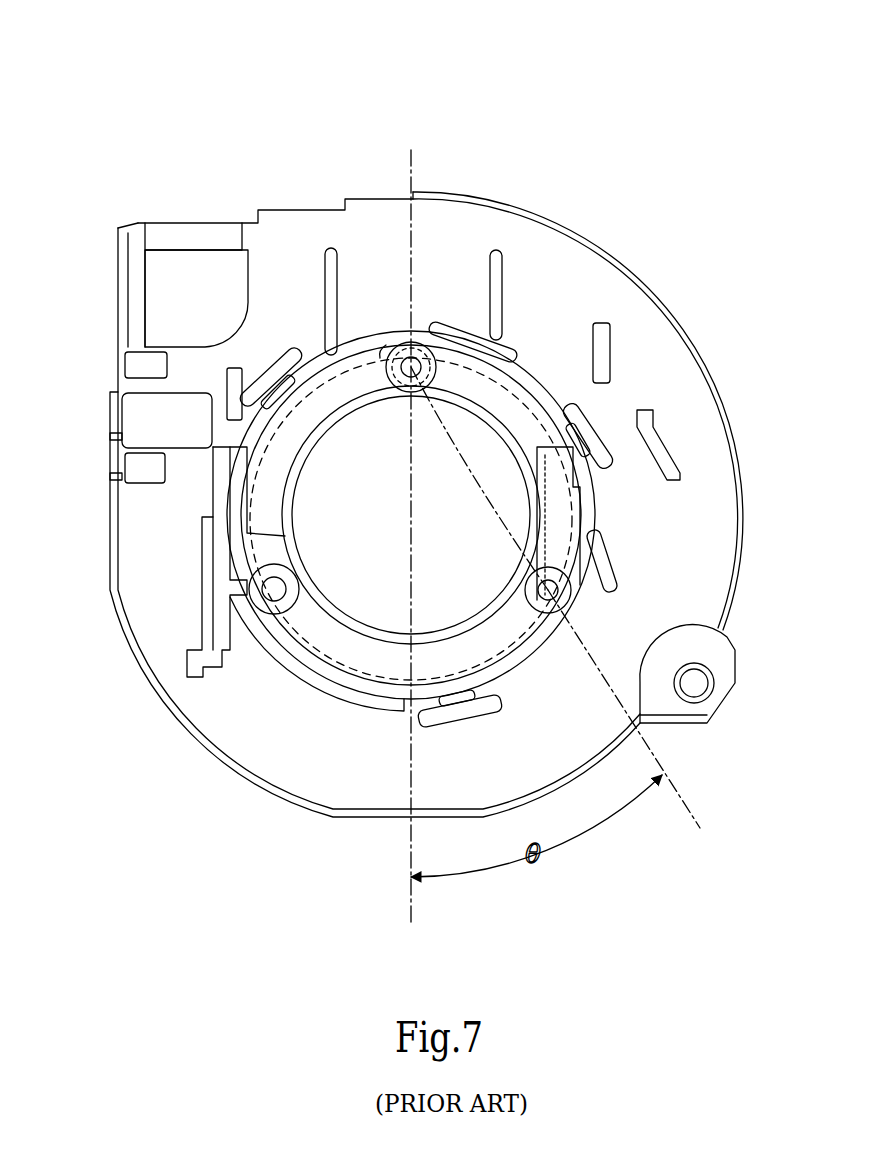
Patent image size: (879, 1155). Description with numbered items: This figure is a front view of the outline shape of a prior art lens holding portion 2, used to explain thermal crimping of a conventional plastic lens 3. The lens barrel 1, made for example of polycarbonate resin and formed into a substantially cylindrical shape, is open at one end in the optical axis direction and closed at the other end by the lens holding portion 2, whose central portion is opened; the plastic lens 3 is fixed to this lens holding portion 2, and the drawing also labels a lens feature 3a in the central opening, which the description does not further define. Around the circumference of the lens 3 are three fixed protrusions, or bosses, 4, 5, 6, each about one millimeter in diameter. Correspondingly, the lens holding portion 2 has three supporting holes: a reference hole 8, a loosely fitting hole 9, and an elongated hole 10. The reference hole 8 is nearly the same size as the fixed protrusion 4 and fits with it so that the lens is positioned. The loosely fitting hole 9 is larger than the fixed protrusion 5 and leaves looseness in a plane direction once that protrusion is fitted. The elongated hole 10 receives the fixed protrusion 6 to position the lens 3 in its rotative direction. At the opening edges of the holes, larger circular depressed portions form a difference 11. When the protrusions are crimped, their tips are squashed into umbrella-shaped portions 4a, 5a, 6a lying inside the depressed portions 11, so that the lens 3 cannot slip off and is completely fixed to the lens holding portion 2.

The lens barrel 1 is at (627, 126).
The lens holding portion 2 is at (320, 355).
The plastic lens 3 is at (260, 378).
The aperture ring 3a is at (477, 440).
The fixed protrusion 4 is at (405, 343).
The umbrella-shaped portion 4a is at (435, 340).
The fixed protrusion 5 is at (240, 588).
The umbrella-shaped portion 5a is at (257, 595).
The fixed protrusion 6 is at (560, 592).
The umbrella-shaped portion 6a is at (590, 577).
The reference hole 8 is at (387, 353).
The loosely fitting hole 9 is at (249, 561).
The elongated hole 10 is at (588, 600).
The depressed portion 11 is at (411, 367).